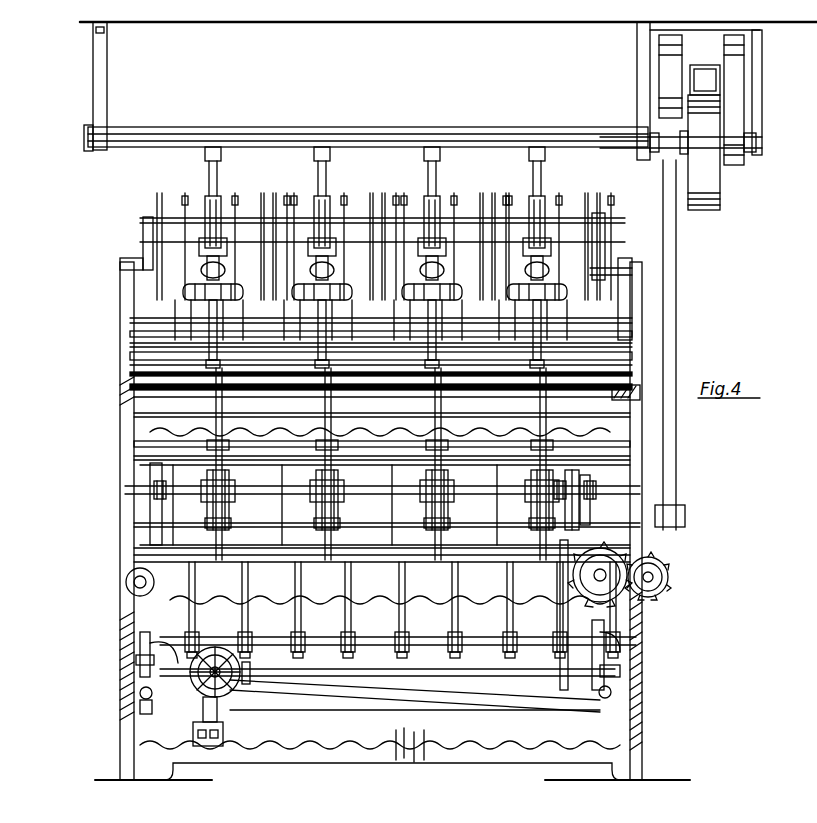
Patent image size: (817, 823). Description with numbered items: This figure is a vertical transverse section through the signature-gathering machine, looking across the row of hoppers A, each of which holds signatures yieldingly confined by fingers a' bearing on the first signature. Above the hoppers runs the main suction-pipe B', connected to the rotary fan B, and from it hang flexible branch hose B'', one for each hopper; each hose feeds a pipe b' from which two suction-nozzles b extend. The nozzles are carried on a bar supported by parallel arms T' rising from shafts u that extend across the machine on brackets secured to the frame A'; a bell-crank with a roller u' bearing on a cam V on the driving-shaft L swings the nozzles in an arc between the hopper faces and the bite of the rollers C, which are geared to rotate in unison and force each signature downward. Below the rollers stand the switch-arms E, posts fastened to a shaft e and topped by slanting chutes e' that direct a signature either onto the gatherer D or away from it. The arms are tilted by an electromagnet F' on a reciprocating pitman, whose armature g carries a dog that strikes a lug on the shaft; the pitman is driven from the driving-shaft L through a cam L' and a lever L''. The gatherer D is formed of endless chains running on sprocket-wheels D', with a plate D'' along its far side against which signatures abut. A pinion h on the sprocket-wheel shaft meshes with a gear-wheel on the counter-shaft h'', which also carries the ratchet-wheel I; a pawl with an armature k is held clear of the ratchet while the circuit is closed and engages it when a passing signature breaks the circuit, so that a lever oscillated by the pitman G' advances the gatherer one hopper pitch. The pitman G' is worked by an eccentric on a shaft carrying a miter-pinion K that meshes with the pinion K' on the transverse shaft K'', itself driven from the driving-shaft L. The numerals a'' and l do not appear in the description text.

The rotary fan B is at (704, 152).
The main suction-pipe B' is at (368, 122).
The branch hose B'' is at (393, 353).
The fingers a' is at (390, 182).
The lower needle bar a'' is at (382, 431).
The hopper A is at (381, 282).
The frame A' is at (382, 521).
The nozzle b is at (388, 290).
The pipe b' is at (359, 284).
The shaft u is at (373, 361).
The roller u' is at (408, 323).
The roller C is at (381, 371).
The gatherer D is at (377, 578).
The sprocket-wheel D' is at (388, 574).
The plate D'' is at (382, 550).
The switch-arm E is at (225, 611).
The shaft e is at (398, 630).
The slanting chute e' is at (387, 536).
The electromagnet F' is at (384, 667).
The reciprocating pitman G' is at (380, 734).
The ratchet-wheel I is at (642, 616).
The miter-pinion K is at (205, 696).
The pinion K' is at (387, 683).
The transverse shaft K'' is at (415, 696).
The driving-shaft L is at (382, 505).
The cam L' is at (145, 500).
The lever L'' is at (372, 613).
The cam V is at (207, 513).
The armature g is at (575, 580).
The pinion h is at (670, 604).
The counter-shaft h'' is at (656, 632).
The armature k is at (659, 345).
The pawl l is at (152, 700).
The parallel arm T' is at (547, 551).